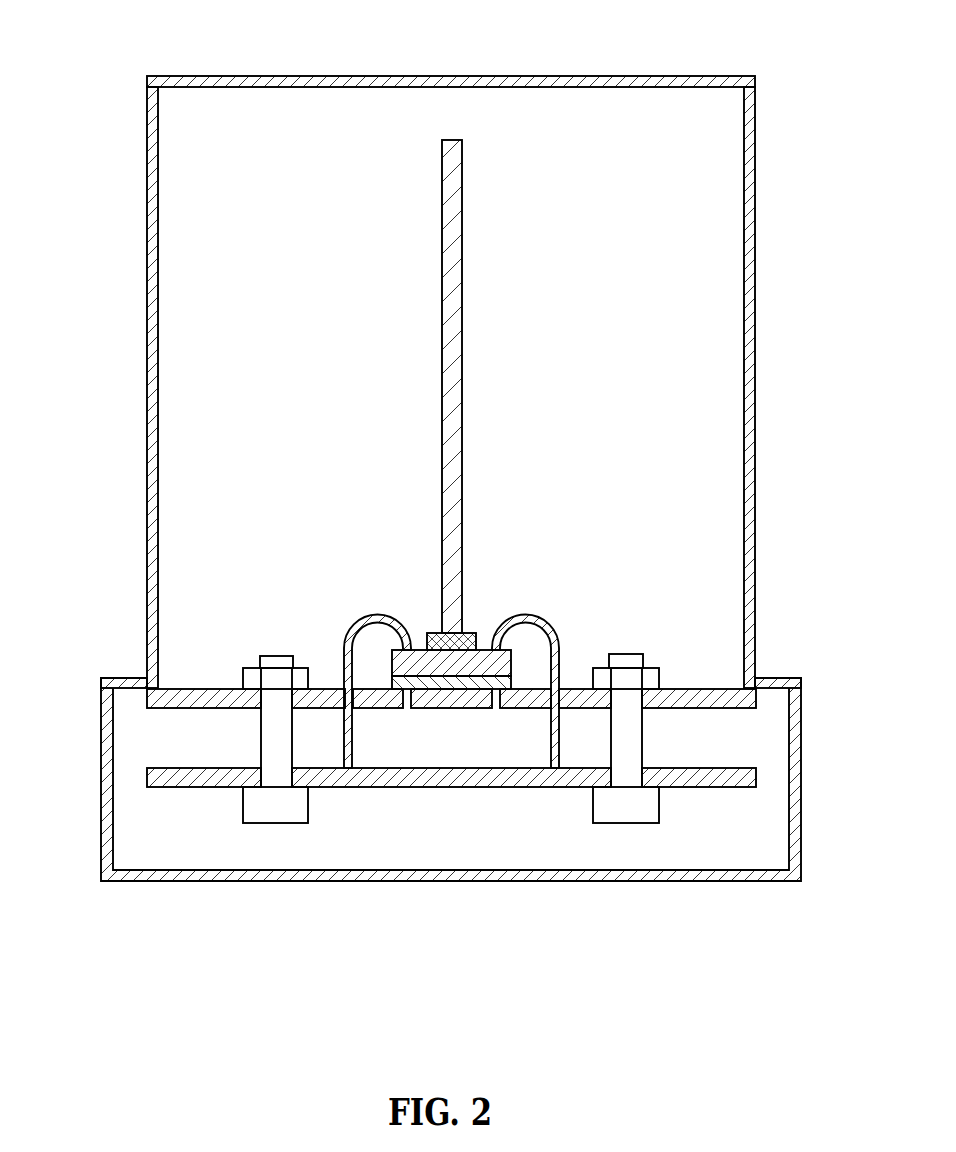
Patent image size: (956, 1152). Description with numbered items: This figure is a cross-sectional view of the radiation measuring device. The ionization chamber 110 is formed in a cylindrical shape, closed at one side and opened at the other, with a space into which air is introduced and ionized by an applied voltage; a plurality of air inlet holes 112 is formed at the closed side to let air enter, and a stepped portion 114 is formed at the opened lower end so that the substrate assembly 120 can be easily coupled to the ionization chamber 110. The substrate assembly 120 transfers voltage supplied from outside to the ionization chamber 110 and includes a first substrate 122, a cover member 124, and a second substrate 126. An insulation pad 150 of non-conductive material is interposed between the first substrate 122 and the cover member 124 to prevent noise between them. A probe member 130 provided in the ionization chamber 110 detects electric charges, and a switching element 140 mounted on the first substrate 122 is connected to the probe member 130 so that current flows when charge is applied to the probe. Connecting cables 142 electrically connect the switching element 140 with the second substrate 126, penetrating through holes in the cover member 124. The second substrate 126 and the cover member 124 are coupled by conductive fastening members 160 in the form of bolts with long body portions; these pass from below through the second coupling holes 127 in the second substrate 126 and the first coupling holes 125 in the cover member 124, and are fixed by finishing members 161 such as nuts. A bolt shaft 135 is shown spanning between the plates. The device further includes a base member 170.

The ionization chamber 110 is at (162, 82).
The air inlet holes 112 is at (293, 82).
The stepped portion 114 is at (127, 685).
The substrate assembly 120 is at (451, 859).
The first substrate 122 is at (493, 672).
The cover member 124 is at (692, 700).
The first coupling holes 125 is at (262, 698).
The second substrate 126 is at (735, 778).
The second coupling holes 127 is at (273, 775).
The probe member 130 is at (462, 401).
The bolt shaft 135 is at (273, 727).
The switching element 140 is at (458, 655).
The connecting cables 142 is at (367, 615).
The insulation pad 150 is at (412, 678).
The fastening members 160 is at (278, 807).
The finishing members 161 is at (650, 677).
The base member 170 is at (196, 876).